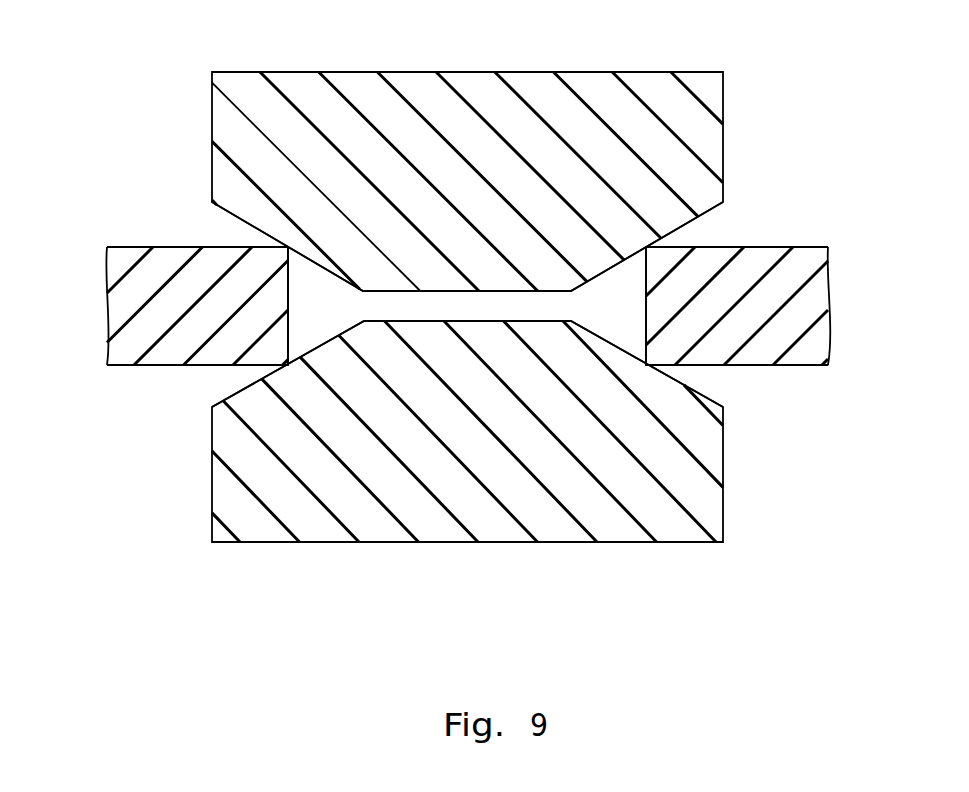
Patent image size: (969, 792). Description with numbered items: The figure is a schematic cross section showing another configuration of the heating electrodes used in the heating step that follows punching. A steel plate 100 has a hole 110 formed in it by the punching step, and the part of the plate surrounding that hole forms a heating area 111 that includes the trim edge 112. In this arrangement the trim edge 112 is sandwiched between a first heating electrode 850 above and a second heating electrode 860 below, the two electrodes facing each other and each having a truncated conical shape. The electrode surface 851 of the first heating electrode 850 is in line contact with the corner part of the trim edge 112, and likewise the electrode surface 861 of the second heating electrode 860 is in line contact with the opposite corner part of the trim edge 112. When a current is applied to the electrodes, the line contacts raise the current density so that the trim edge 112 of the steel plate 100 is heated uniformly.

The steel plate 100 is at (125, 247).
The hole 110 is at (415, 313).
The heating area 111 is at (260, 302).
The trim edge 112 is at (290, 300).
The first heating electrode 850 is at (445, 72).
The electrode surface 851 is at (255, 227).
The second heating electrode 860 is at (482, 542).
The electrode surface 861 is at (263, 378).